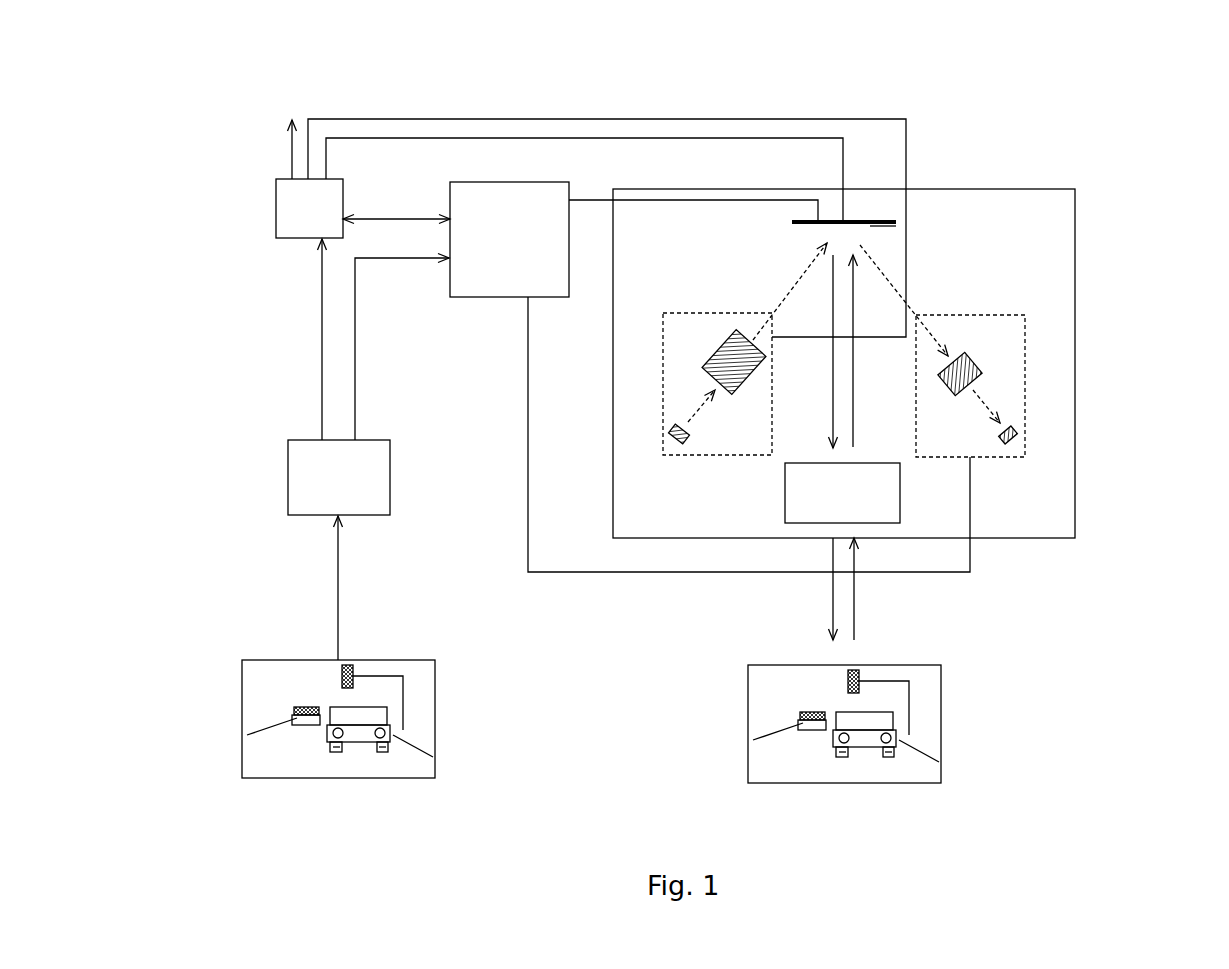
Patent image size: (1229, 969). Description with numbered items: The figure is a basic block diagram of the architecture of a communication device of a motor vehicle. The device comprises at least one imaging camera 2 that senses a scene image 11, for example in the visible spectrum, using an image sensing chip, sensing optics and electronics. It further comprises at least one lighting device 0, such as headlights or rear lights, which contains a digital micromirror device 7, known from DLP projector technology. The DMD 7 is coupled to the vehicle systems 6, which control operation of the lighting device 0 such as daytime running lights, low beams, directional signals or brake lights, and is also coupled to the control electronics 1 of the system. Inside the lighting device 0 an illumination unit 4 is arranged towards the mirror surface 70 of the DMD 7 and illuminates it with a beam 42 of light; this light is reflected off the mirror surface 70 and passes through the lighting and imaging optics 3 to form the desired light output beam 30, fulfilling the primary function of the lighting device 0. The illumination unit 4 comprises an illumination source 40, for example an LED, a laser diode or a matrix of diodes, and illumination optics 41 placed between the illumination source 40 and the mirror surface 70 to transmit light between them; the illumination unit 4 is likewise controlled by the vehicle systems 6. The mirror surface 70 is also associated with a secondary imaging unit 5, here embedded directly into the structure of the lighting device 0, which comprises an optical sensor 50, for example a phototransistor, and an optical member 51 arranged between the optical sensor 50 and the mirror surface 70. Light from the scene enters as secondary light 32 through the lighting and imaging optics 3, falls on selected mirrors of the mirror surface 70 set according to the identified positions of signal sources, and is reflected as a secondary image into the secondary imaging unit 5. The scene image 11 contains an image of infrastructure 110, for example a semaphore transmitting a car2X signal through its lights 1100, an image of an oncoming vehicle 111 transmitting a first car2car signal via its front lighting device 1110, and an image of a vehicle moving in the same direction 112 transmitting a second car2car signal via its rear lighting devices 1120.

The lighting device 0 is at (1043, 245).
The control electronics 1 is at (509, 239).
The imaging camera 2 is at (339, 477).
The lighting and imaging optics 3 is at (842, 493).
The illumination unit 4 is at (663, 375).
The illumination source 40 is at (670, 436).
The illumination optics 41 is at (720, 333).
The beam of light 42 is at (783, 295).
The secondary imaging unit 5 is at (1008, 395).
The optical sensor 50 is at (1023, 437).
The optical member 51 is at (983, 367).
The vehicle systems 6 is at (309, 208).
The digital micromirror device 7 is at (883, 205).
The mirror surface 70 is at (893, 228).
The light output beam 30 is at (833, 397).
The secondary light 32 is at (855, 428).
The scene image 11 is at (435, 702).
The infrastructure 110 is at (405, 685).
The lights 1100 is at (352, 665).
The oncoming vehicle 111 is at (292, 710).
The front lighting device 1110 is at (317, 725).
The vehicle moving in the same direction 112 is at (377, 717).
The rear lighting devices 1120 is at (370, 752).